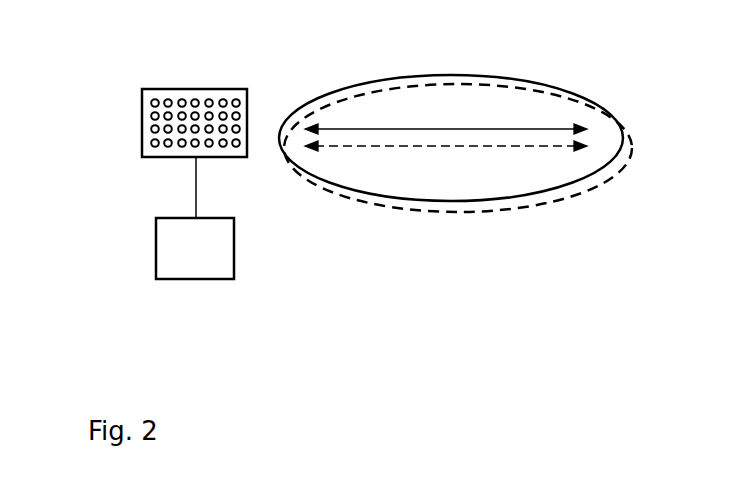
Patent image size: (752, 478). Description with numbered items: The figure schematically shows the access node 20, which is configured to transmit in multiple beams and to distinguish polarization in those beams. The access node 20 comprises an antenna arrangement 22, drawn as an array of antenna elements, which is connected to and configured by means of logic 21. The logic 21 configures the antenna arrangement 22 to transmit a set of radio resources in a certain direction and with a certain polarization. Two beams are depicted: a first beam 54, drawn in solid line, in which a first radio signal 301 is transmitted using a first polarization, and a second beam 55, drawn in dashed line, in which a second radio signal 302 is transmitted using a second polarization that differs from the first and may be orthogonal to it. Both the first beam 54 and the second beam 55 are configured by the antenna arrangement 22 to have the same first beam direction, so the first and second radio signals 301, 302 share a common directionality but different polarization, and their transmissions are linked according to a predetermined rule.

The access node 20 is at (122, 213).
The logic 21 is at (195, 218).
The antenna arrangement 22 is at (142, 152).
The first beam 54 is at (512, 76).
The second beam 55 is at (338, 193).
The first radio signal 301 is at (477, 125).
The second radio signal 302 is at (418, 142).